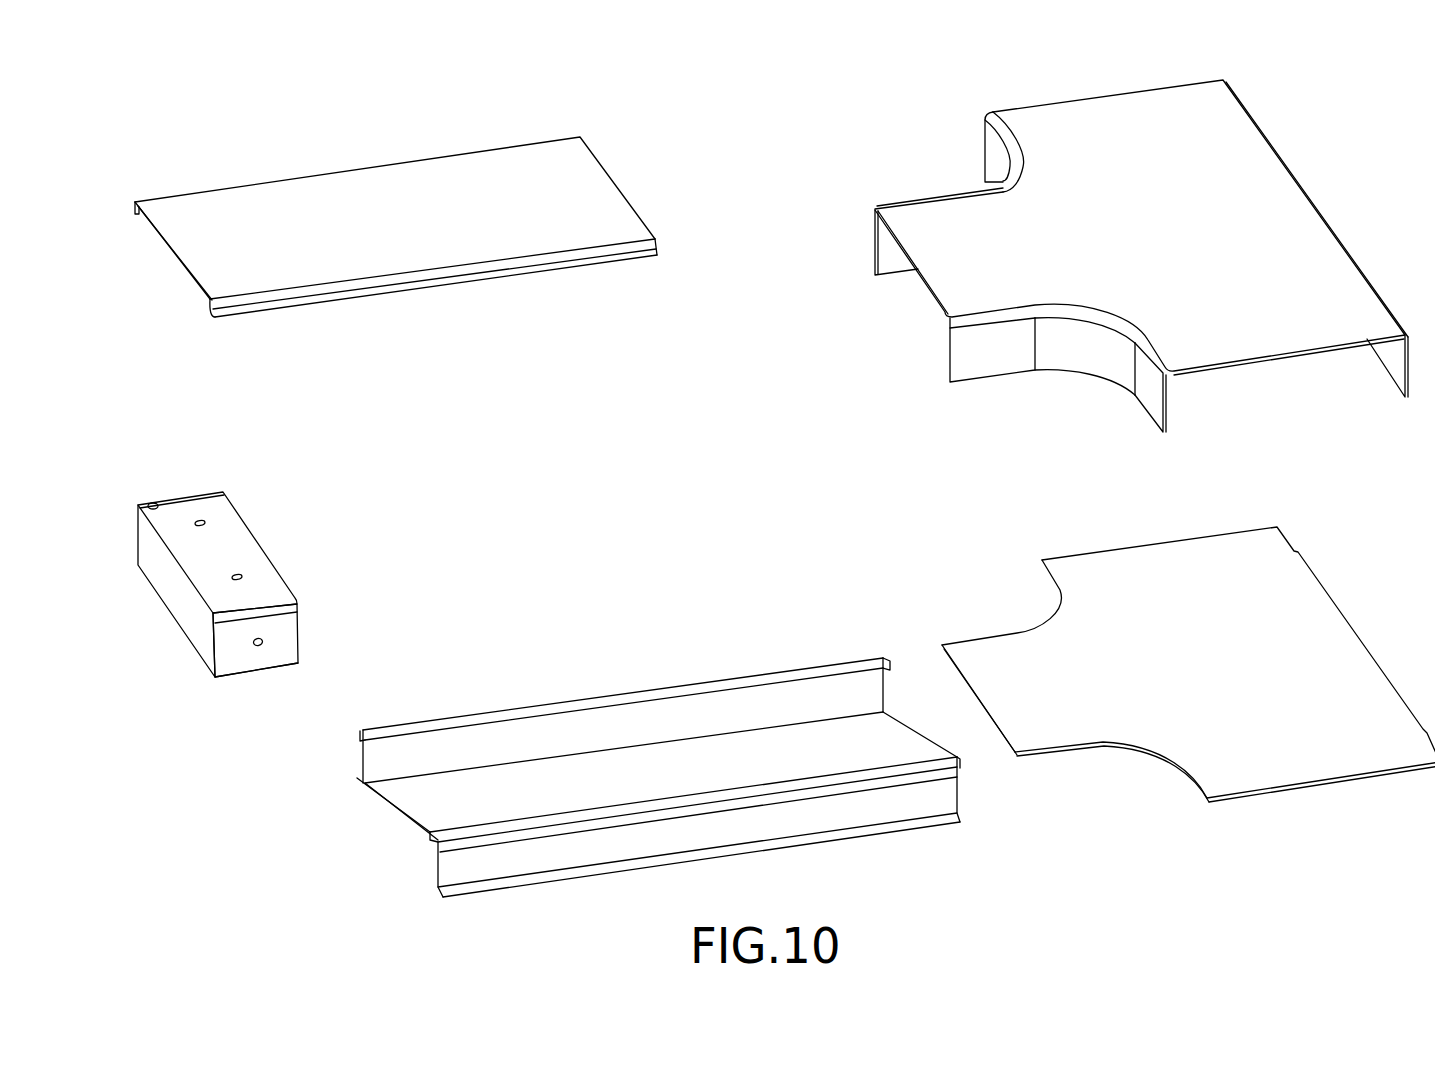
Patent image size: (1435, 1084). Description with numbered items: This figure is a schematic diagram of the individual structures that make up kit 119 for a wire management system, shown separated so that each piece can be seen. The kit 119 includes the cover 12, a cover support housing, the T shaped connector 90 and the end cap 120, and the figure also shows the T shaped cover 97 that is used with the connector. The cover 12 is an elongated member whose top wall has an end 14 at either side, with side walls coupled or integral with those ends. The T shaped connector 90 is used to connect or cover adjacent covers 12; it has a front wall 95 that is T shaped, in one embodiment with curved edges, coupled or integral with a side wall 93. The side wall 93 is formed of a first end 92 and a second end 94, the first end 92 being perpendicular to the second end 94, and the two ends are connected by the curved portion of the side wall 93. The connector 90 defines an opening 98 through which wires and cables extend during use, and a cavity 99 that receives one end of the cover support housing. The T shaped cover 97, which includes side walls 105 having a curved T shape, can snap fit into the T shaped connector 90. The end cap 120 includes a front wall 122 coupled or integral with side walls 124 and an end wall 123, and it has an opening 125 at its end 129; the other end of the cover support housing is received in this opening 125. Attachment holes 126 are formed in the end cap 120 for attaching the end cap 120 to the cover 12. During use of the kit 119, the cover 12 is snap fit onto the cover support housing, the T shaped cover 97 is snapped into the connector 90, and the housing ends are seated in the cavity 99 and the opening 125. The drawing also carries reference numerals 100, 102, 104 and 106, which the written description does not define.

The cover 12 is at (300, 192).
The end of top wall 14 is at (597, 860).
The T shaped connector 90 is at (1250, 187).
The first end 92 is at (983, 137).
The side wall 93 is at (1003, 177).
The second end 94 is at (905, 203).
The front wall 95 is at (1305, 272).
The T shaped cover 97 is at (1320, 643).
The opening 98 is at (1255, 388).
The cavity 99 is at (920, 280).
The cover fitting 100 is at (1125, 257).
The base fitting 102 is at (1188, 670).
The edge 104 is at (1292, 785).
The side walls 105 is at (1027, 636).
The curved edge 106 is at (1122, 743).
The kit 119 is at (370, 74).
The end cap 120 is at (150, 505).
The front wall 122 is at (178, 533).
The end wall 123 is at (235, 575).
The side walls 124 is at (167, 500).
The opening 125 is at (297, 592).
The attachment holes 126 is at (205, 525).
The end 129 is at (298, 663).